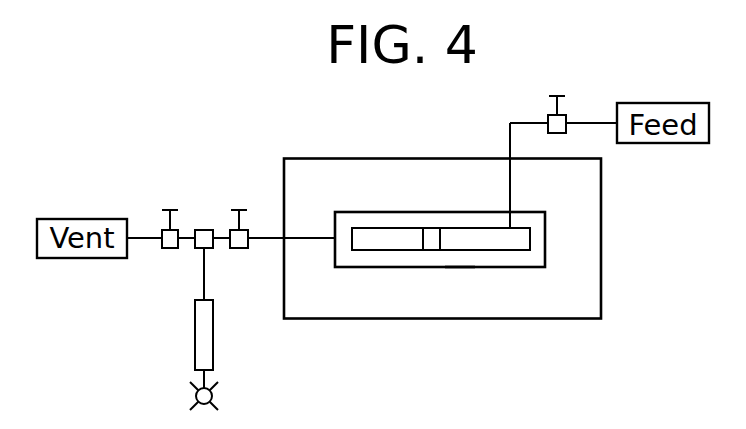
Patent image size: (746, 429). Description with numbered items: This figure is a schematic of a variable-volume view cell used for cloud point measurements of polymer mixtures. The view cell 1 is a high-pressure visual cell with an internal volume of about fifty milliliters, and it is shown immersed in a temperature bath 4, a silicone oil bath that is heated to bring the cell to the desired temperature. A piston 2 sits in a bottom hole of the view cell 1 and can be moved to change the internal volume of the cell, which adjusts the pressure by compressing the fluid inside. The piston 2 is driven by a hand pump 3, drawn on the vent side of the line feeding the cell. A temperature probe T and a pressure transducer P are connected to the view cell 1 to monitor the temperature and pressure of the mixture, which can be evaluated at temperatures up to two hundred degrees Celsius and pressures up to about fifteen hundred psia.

The view cell 1 is at (387, 267).
The piston 2 is at (430, 228).
The hand pump 3 is at (213, 357).
The temperature bath 4 is at (580, 304).
The temperature probe T is at (460, 268).
The pressure transducer P is at (508, 250).